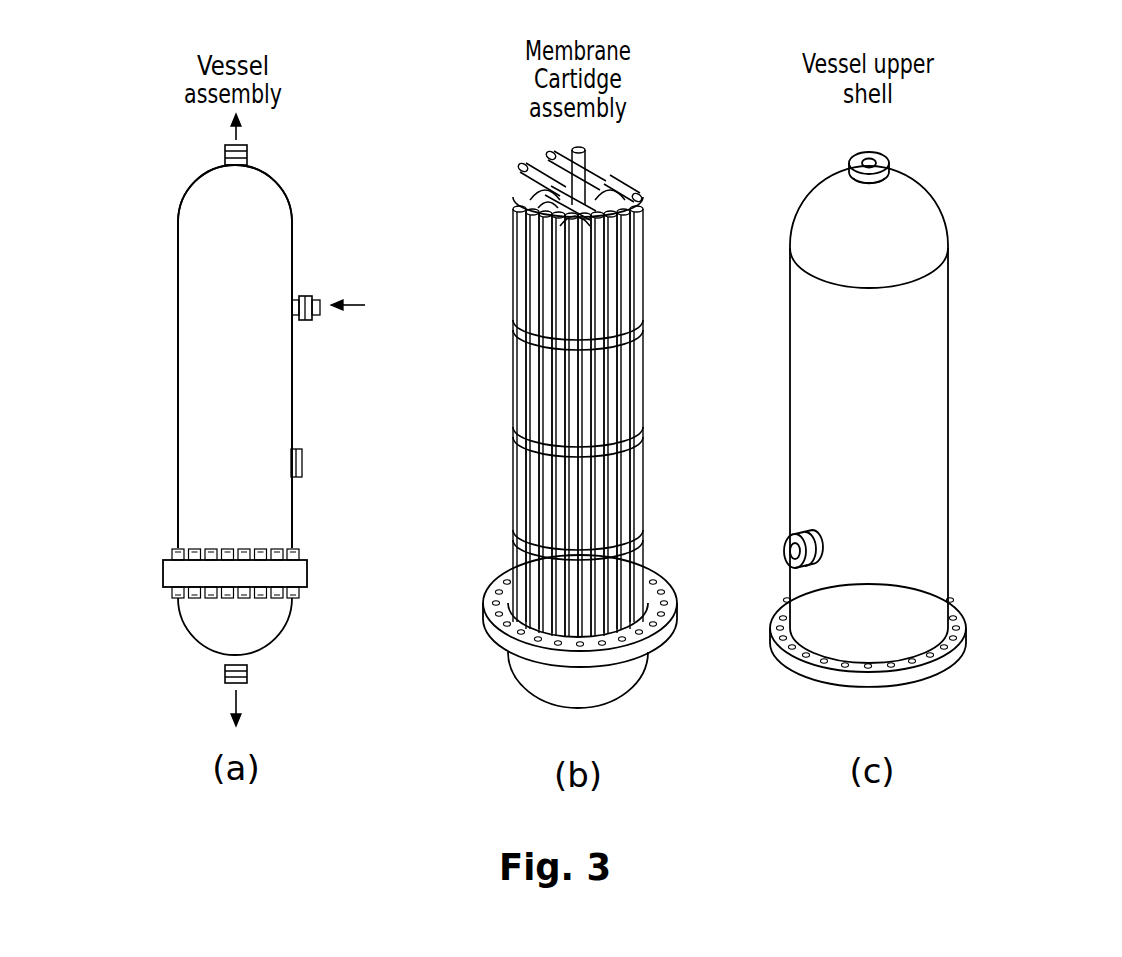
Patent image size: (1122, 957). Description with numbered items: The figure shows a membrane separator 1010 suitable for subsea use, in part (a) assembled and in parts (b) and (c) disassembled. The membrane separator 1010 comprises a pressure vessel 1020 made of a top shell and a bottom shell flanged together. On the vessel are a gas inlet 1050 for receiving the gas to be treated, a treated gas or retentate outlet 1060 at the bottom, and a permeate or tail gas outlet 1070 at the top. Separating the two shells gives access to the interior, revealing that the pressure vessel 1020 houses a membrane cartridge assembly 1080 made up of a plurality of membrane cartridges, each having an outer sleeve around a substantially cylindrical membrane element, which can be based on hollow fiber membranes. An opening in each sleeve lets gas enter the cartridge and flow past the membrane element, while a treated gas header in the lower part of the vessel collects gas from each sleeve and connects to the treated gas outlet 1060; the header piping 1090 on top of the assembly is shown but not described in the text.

The membrane separator 1010 is at (160, 222).
The pressure vessel 1020 is at (272, 237).
The gas inlet 1050 is at (360, 268).
The treated gas outlet 1060 is at (218, 672).
The permeate outlet 1070 is at (248, 152).
The membrane cartridge assembly 1080 is at (640, 247).
The header piping 1090 is at (630, 187).